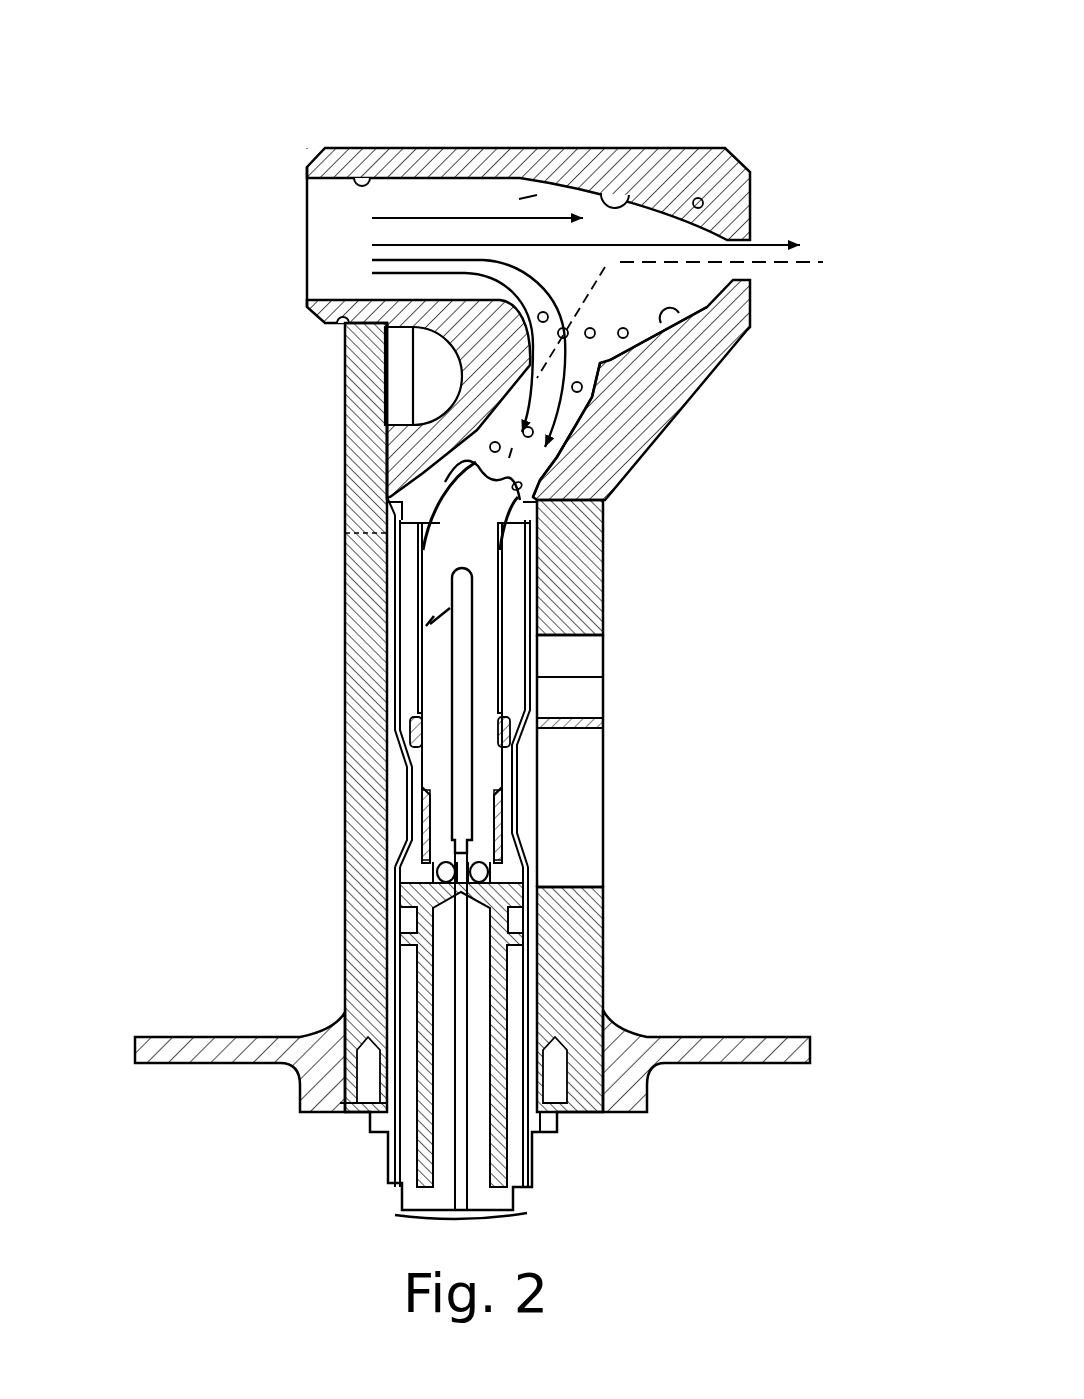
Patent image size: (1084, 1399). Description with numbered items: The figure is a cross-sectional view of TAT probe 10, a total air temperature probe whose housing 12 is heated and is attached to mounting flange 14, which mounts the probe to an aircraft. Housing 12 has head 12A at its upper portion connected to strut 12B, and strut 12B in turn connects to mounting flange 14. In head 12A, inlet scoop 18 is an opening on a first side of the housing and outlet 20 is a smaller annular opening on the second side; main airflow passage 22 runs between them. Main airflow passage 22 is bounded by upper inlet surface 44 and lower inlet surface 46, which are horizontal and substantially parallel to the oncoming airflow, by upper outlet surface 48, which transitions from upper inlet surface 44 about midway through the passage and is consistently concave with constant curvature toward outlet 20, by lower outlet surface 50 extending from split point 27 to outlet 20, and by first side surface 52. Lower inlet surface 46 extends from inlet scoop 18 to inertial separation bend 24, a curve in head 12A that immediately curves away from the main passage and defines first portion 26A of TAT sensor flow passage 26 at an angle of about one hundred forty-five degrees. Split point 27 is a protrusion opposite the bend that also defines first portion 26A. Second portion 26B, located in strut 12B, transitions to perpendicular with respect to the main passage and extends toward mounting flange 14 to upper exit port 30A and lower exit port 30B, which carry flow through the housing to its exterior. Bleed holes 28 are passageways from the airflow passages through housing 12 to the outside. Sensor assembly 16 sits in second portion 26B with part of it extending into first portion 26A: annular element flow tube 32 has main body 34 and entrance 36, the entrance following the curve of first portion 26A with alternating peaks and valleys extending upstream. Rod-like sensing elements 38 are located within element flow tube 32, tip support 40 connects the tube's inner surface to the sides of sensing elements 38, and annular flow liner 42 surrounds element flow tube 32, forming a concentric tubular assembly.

The TAT probe 10 is at (158, 128).
The housing 12 is at (297, 532).
The head 12A is at (700, 170).
The strut 12B is at (360, 812).
The mounting flange 14 is at (200, 1045).
The sensor assembly 16 is at (383, 687).
The inlet scoop 18 is at (326, 273).
The outlet 20 is at (728, 257).
The main airflow passage 22 is at (497, 193).
The inertial separation bend 24 is at (533, 337).
The TAT sensor flow passage 26 is at (580, 405).
The first portion 26A is at (573, 422).
The second portion 26B is at (390, 655).
The split point 27 is at (610, 360).
The bleed holes 28 is at (594, 330).
The upper exit port 30A is at (587, 698).
The lower exit port 30B is at (575, 782).
The element flow tube 32 is at (512, 597).
The main body 34 is at (440, 605).
The entrance 36 is at (470, 507).
The sensing elements 38 is at (463, 650).
The tip support 40 is at (447, 612).
The flow liner 42 is at (530, 677).
The upper inlet surface 44 is at (362, 176).
The lower inlet surface 46 is at (390, 292).
The upper outlet surface 48 is at (630, 193).
The lower outlet surface 50 is at (678, 318).
The first side surface 52 is at (522, 200).